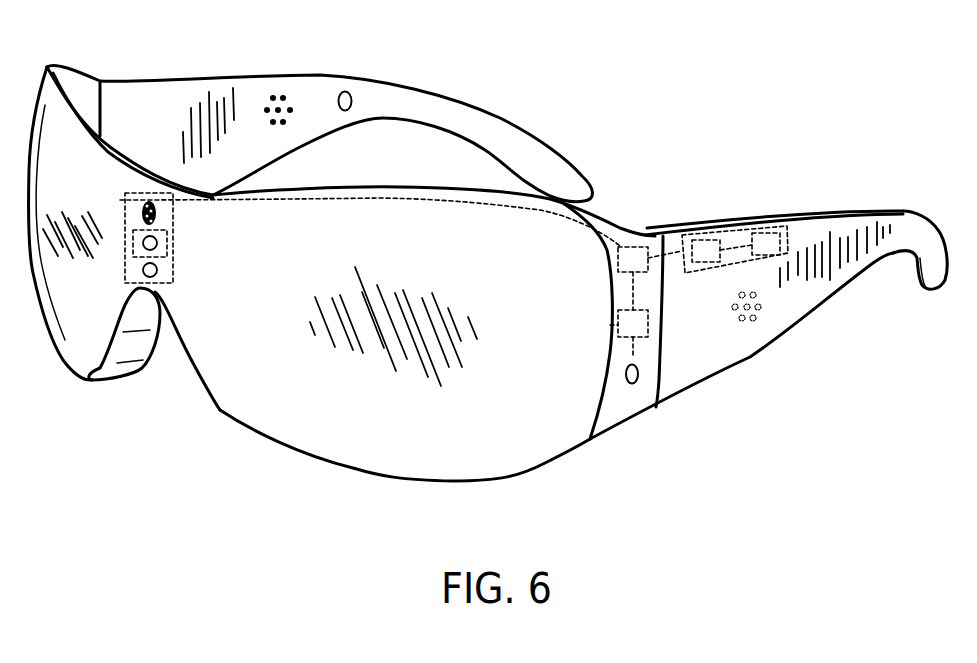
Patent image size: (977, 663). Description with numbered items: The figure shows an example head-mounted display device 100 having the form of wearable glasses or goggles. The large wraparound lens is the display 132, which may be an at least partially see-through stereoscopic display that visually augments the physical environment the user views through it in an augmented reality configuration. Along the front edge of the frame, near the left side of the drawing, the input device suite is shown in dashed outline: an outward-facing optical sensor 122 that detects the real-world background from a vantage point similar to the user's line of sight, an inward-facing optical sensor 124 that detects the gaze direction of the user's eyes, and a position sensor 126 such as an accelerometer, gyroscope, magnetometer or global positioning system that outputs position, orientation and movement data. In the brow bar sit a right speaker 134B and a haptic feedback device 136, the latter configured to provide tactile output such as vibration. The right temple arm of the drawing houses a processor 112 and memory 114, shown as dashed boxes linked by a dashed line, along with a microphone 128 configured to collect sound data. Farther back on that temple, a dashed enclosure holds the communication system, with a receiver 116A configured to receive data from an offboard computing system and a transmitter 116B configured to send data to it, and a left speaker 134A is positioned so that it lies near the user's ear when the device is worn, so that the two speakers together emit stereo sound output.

The head-mounted display device 100 is at (633, 79).
The processor 112 is at (618, 258).
The memory 114 is at (648, 320).
The receiver 116A is at (707, 240).
The transmitter 116B is at (768, 233).
The outward-facing optical sensor 122 is at (157, 212).
The inward-facing optical sensor 124 is at (157, 268).
The position sensor 126 is at (132, 243).
The microphone 128 is at (632, 383).
The display 132 is at (258, 410).
The left speaker 134A is at (753, 321).
The right speaker 134B is at (272, 93).
The haptic feedback device 136 is at (345, 91).